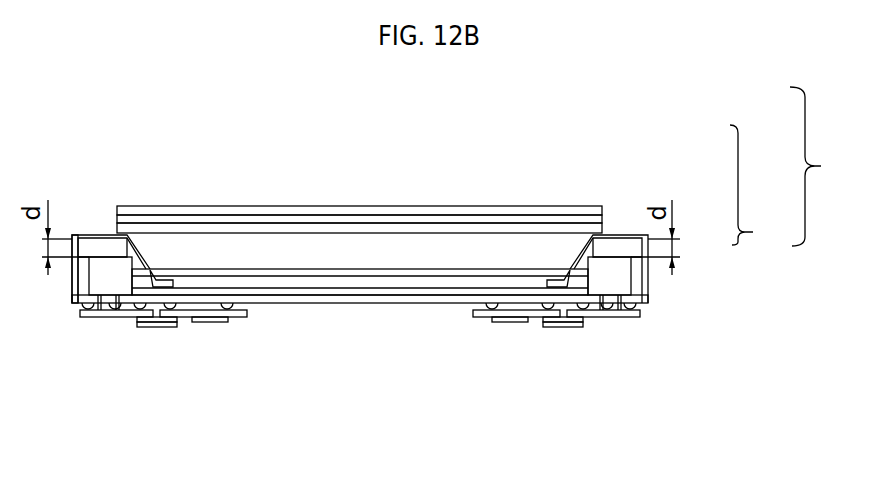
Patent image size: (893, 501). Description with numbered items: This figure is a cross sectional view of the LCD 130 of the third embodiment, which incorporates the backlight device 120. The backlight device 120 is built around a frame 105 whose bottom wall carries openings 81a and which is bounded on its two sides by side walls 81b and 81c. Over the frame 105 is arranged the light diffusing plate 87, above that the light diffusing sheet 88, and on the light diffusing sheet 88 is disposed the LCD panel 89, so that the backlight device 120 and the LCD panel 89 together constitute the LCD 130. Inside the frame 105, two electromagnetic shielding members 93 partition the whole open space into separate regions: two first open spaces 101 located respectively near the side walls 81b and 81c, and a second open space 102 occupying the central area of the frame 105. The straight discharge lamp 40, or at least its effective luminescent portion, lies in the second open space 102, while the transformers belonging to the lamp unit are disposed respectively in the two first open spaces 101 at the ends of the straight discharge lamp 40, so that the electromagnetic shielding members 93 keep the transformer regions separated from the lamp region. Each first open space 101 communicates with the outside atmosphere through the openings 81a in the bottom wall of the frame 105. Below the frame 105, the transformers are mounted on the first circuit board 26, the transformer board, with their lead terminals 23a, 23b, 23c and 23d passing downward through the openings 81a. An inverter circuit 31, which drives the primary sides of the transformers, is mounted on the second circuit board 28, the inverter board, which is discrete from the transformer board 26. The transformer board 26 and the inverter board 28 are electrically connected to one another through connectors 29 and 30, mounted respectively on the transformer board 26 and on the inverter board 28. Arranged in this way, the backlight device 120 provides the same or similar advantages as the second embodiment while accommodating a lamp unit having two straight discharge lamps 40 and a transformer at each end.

The light diffusing plate 87 is at (603, 228).
The light diffusing sheet 88 is at (603, 217).
The LCD panel 89 is at (603, 209).
The second open space 102 is at (330, 250).
The straight discharge lamp 40 is at (317, 273).
The frame 105 is at (652, 283).
The first open space 101 is at (82, 236).
The electromagnetic shielding member 93 is at (97, 247).
The opening 81a is at (112, 314).
The side wall 81b is at (72, 278).
The side wall 81c is at (629, 288).
The lead terminal 23a is at (100, 318).
The lead terminal 23b is at (118, 318).
The lead terminal 23c is at (617, 318).
The lead terminal 23d is at (595, 318).
The first circuit board 26 is at (88, 320).
The second circuit board 28 is at (238, 318).
The connector 29 is at (145, 323).
The connector 30 is at (170, 327).
The inverter circuit 31 is at (217, 323).
The backlight device 120 is at (764, 185).
The LCD 130 is at (826, 166).